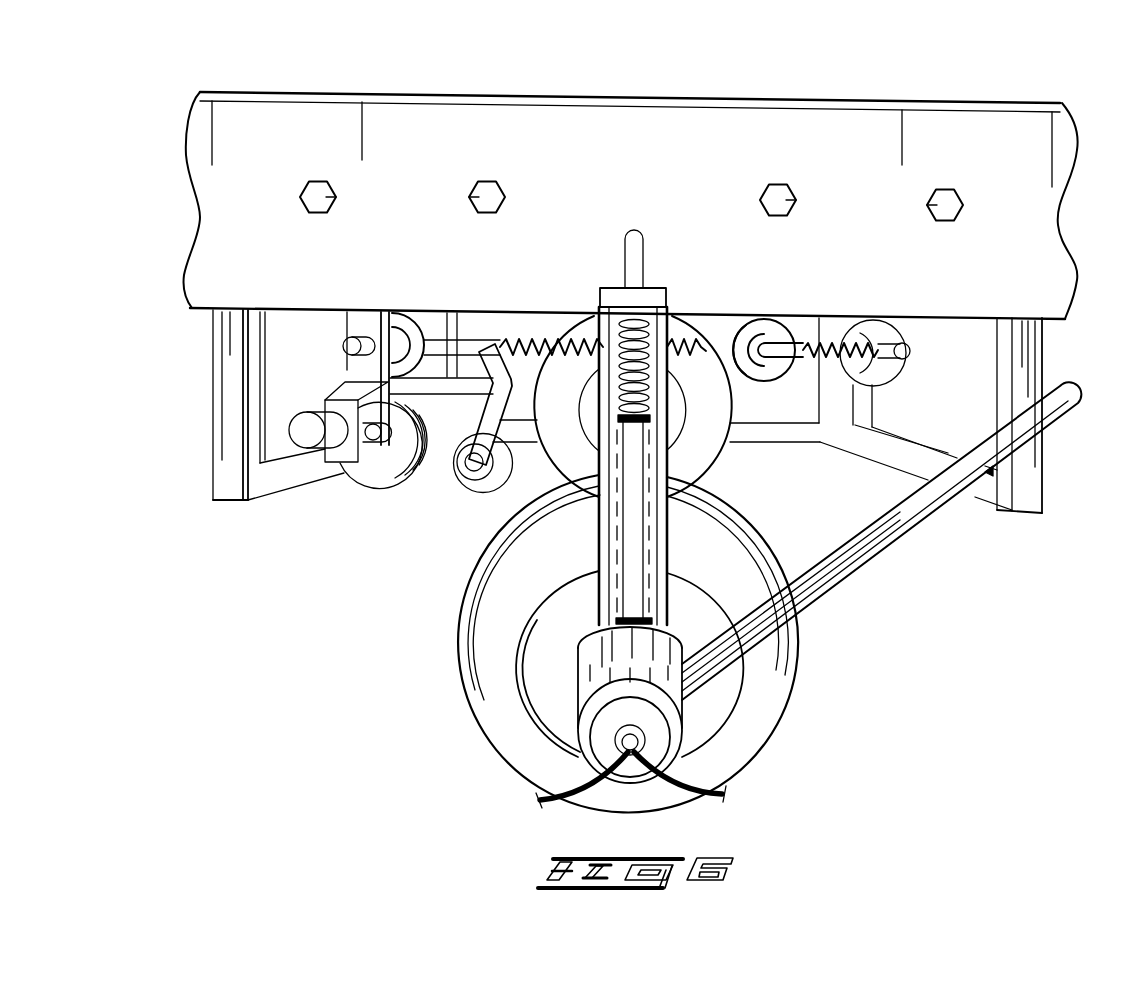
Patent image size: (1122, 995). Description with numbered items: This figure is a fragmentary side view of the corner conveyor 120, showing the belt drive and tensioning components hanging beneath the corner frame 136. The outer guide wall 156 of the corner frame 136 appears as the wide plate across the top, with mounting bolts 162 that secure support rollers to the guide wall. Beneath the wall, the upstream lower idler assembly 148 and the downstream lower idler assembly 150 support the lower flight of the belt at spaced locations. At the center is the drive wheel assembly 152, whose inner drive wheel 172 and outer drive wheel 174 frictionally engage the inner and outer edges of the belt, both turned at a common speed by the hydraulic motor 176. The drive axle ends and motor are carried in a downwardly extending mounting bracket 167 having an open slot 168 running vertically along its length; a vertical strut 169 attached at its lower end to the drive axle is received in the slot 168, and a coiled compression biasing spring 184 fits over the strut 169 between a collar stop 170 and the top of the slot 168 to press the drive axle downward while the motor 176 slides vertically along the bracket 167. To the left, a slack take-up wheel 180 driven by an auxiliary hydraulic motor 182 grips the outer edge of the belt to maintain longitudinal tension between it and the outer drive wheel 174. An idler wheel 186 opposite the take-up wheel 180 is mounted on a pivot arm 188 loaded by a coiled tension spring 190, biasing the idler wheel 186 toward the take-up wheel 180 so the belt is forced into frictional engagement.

The corner conveyor 120 is at (674, 66).
The corner frame 136 is at (222, 247).
The upstream lower idler assembly 148 is at (783, 348).
The downstream lower idler assembly 150 is at (456, 345).
The drive wheel assembly 152 is at (460, 634).
The outer guide wall 156 is at (575, 122).
The mounting bolt 162 is at (469, 197).
The mounting bracket 167 is at (607, 530).
The open slot 168 is at (648, 530).
The vertical strut 169 is at (638, 583).
The collar stop 170 is at (712, 482).
The inner drive wheel 172 is at (713, 455).
The outer drive wheel 174 is at (767, 718).
The hydraulic motor 176 is at (620, 683).
The slack take-up wheel 180 is at (378, 478).
The hydraulic motor 182 is at (305, 428).
The biasing spring 184 is at (666, 318).
The idler wheel 186 is at (467, 490).
The pivot arm 188 is at (473, 497).
The coiled tension spring 190 is at (541, 322).